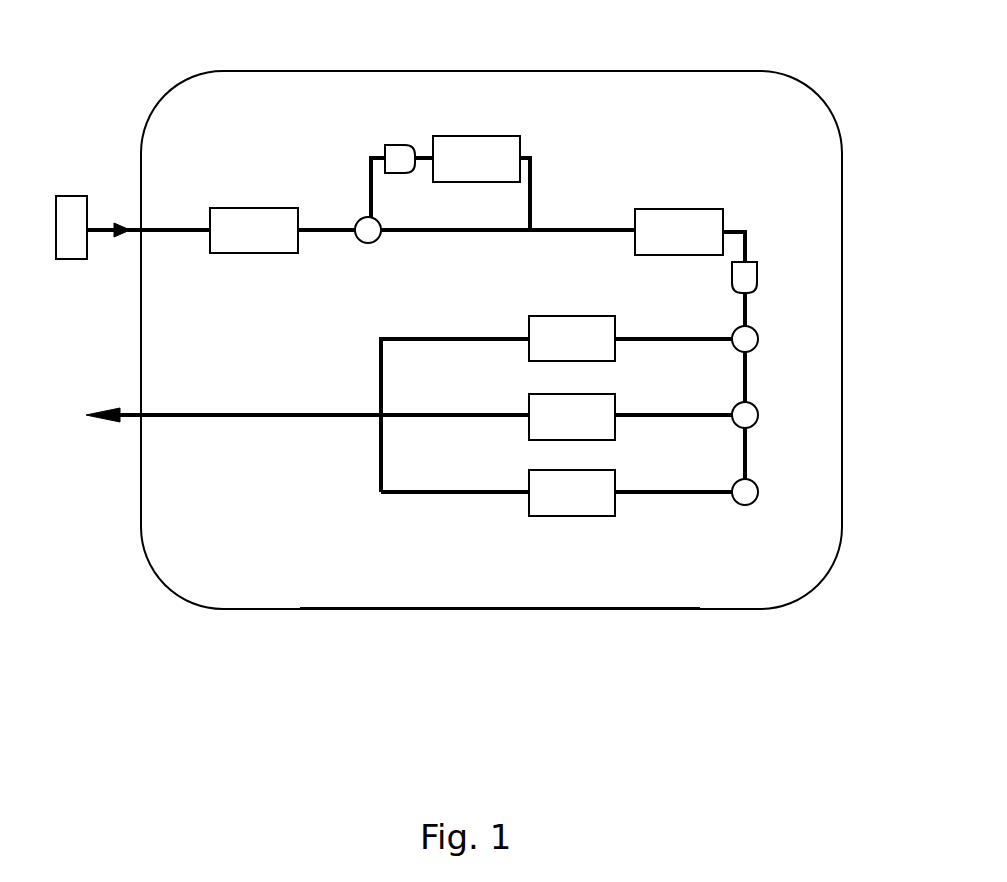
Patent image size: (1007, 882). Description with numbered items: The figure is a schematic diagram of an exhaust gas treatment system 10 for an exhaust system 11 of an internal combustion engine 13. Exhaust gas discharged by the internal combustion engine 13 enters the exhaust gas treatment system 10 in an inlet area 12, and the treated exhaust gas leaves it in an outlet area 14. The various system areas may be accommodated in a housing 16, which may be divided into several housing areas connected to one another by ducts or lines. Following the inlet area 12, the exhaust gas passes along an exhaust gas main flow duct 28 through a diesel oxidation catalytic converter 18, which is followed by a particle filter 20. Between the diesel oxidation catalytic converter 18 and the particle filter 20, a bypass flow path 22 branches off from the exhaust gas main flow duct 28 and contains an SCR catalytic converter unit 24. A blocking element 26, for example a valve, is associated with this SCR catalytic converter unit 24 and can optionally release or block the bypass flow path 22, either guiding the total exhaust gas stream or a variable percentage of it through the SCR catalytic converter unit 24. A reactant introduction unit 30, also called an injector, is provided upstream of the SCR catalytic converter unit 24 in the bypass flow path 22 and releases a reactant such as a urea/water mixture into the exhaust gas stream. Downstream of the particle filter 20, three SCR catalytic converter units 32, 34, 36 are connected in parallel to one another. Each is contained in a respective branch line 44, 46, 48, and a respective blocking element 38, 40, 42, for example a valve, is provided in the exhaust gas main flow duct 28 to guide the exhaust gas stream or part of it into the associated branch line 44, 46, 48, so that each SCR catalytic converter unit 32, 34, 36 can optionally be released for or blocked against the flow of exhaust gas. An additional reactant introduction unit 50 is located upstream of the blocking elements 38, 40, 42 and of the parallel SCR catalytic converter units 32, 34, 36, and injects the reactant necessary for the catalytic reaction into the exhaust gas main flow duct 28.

The exhaust gas treatment system 10 is at (826, 102).
The exhaust system 11 is at (213, 674).
The inlet area 12 is at (102, 226).
The internal combustion engine 13 is at (70, 262).
The outlet area 14 is at (104, 422).
The housing 16 is at (740, 609).
The diesel oxidation catalytic converter 18 is at (230, 206).
The particle filter 20 is at (672, 208).
The bypass flow path 22 is at (368, 172).
The SCR catalytic converter unit 24 is at (503, 136).
The blocking element 26 is at (362, 245).
The exhaust gas main flow duct 28 is at (560, 228).
The reactant introduction unit 30 is at (397, 143).
The SCR catalytic converter unit 32 is at (580, 315).
The SCR catalytic converter unit 34 is at (622, 400).
The SCR catalytic converter unit 36 is at (620, 482).
The blocking element 38 is at (758, 332).
The blocking element 40 is at (758, 413).
The blocking element 42 is at (758, 500).
The branch line 44 is at (399, 338).
The branch line 46 is at (400, 413).
The branch line 48 is at (400, 490).
The additional reactant introduction unit 50 is at (758, 276).